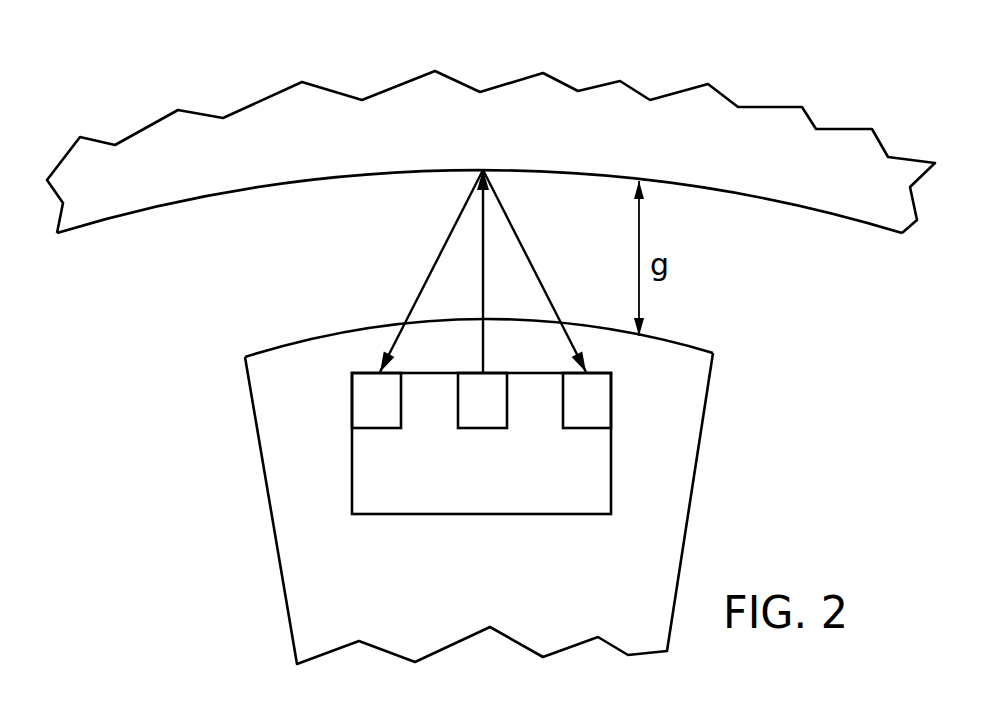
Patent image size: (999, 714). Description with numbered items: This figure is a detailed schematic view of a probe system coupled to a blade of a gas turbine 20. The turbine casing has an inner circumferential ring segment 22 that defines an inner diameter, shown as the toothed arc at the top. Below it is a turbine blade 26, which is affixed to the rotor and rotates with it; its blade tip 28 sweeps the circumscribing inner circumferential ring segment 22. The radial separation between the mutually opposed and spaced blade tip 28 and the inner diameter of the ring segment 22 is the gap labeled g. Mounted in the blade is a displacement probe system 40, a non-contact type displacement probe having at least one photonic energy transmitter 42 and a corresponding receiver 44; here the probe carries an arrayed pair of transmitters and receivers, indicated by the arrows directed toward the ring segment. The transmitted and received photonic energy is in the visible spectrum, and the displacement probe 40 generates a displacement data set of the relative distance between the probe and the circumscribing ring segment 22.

The gas turbine 20 is at (843, 100).
The inner circumferential ring segment 22 is at (795, 202).
The turbine blade 26 is at (687, 466).
The blade tip 28 is at (703, 348).
The displacement probe system 40 is at (390, 470).
The photonic energy transmitter 42 is at (493, 399).
The receiver 44 is at (372, 397).